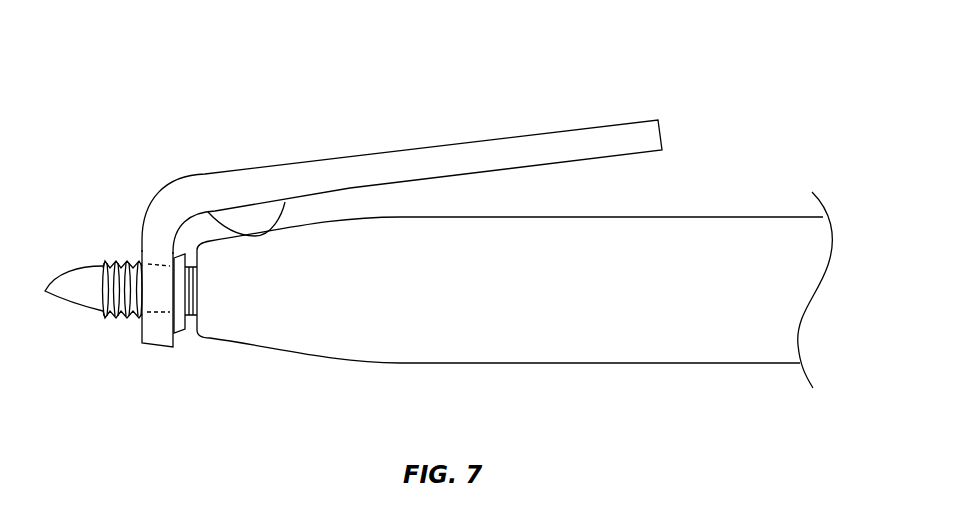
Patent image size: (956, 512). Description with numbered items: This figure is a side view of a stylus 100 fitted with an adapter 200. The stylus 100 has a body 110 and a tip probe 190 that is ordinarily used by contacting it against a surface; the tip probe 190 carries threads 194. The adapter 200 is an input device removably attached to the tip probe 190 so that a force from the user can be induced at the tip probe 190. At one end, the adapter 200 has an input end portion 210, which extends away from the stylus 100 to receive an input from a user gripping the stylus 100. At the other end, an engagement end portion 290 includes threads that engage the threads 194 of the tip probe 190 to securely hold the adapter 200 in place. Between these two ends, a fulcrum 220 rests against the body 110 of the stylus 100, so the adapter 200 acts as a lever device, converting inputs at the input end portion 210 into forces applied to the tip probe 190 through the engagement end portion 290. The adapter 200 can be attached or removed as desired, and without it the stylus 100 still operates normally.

The stylus 100 is at (66, 96).
The body 110 is at (633, 363).
The tip probe 190 is at (46, 295).
The threads 194 is at (110, 318).
The adapter 200 is at (156, 200).
The input end portion 210 is at (577, 128).
The fulcrum 220 is at (255, 217).
The engagement end portion 290 is at (163, 262).